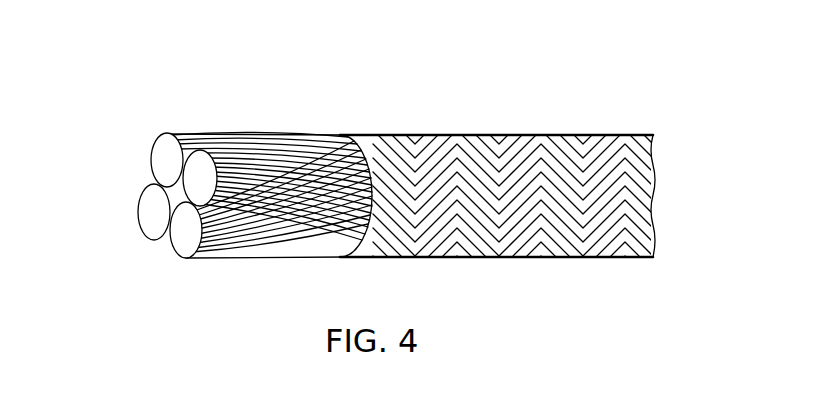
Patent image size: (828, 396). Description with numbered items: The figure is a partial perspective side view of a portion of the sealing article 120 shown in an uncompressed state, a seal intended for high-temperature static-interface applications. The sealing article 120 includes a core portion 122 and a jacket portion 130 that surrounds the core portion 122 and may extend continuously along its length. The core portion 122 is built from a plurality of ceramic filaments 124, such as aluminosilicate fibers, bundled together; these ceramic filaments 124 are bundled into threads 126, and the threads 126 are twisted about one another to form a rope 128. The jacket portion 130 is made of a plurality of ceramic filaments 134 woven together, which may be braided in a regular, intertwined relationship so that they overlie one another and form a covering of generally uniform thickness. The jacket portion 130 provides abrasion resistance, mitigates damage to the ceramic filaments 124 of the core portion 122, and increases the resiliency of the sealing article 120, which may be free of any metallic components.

The sealing article 120 is at (390, 175).
The core portion 122 is at (138, 217).
The ceramic filaments 124 is at (236, 157).
The threads 126 is at (143, 145).
The rope 128 is at (216, 192).
The jacket portion 130 is at (503, 210).
The ceramic filaments 134 is at (472, 158).